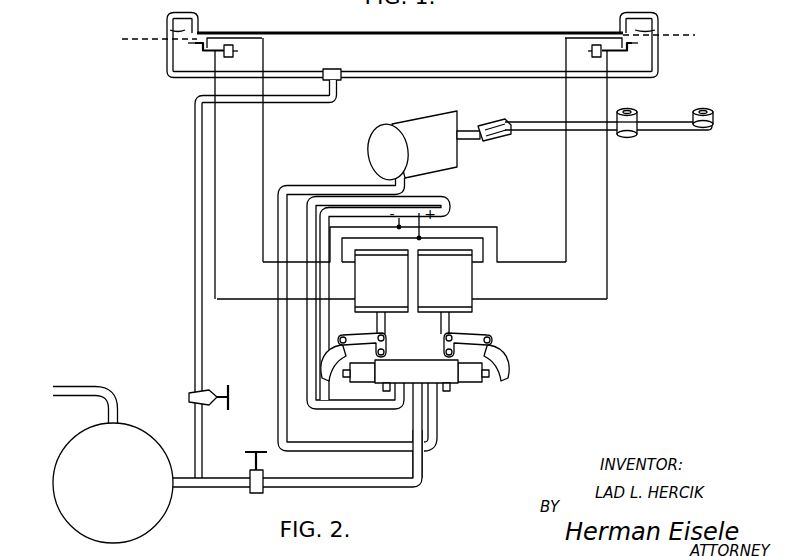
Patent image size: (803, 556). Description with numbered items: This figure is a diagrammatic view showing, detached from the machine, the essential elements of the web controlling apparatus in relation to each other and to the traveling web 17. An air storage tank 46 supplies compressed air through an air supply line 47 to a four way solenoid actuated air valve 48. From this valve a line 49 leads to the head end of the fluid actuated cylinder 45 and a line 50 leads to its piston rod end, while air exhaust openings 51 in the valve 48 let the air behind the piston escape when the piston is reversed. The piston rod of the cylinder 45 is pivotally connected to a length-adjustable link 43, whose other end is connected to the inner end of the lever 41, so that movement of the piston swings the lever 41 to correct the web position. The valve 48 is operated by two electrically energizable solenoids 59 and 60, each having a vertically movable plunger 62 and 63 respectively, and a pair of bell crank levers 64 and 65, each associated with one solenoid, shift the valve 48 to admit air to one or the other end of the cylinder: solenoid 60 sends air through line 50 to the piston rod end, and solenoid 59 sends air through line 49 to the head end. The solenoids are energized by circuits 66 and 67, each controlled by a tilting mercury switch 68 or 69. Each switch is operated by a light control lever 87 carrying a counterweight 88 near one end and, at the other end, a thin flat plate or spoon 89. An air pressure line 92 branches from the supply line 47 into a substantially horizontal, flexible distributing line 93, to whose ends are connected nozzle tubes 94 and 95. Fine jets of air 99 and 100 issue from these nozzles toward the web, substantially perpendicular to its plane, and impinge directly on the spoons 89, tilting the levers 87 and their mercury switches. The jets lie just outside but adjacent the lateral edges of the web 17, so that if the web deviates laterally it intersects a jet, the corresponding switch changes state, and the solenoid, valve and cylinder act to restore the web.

The traveling web 17 is at (490, 31).
The lever 41 is at (668, 131).
The link 43 is at (478, 120).
The fluid actuated cylinder 45 is at (400, 124).
The air storage tank 46 is at (113, 467).
The air supply line 47 is at (413, 490).
The four way solenoid actuated air valve 48 is at (416, 367).
The line 49 is at (278, 357).
The line 50 is at (449, 189).
The air exhaust openings 51 is at (385, 391).
The solenoid 59 is at (362, 270).
The solenoid 60 is at (468, 270).
The plunger 62 is at (376, 327).
The plunger 63 is at (452, 324).
The bell crank lever 64 is at (351, 365).
The bell crank lever 65 is at (501, 372).
The circuit 66 is at (263, 152).
The circuit 67 is at (607, 157).
The mercury switch 68 is at (220, 46).
The mercury switch 69 is at (612, 46).
The control lever 87 is at (212, 52).
The counterweight 88 is at (233, 53).
The spoon 89 is at (192, 43).
The air pressure line 92 is at (194, 265).
The distributing line 93 is at (285, 72).
The nozzle tube 94 is at (165, 28).
The nozzle tube 95 is at (660, 18).
The jet of air 99 is at (148, 37).
The jet of air 100 is at (673, 30).